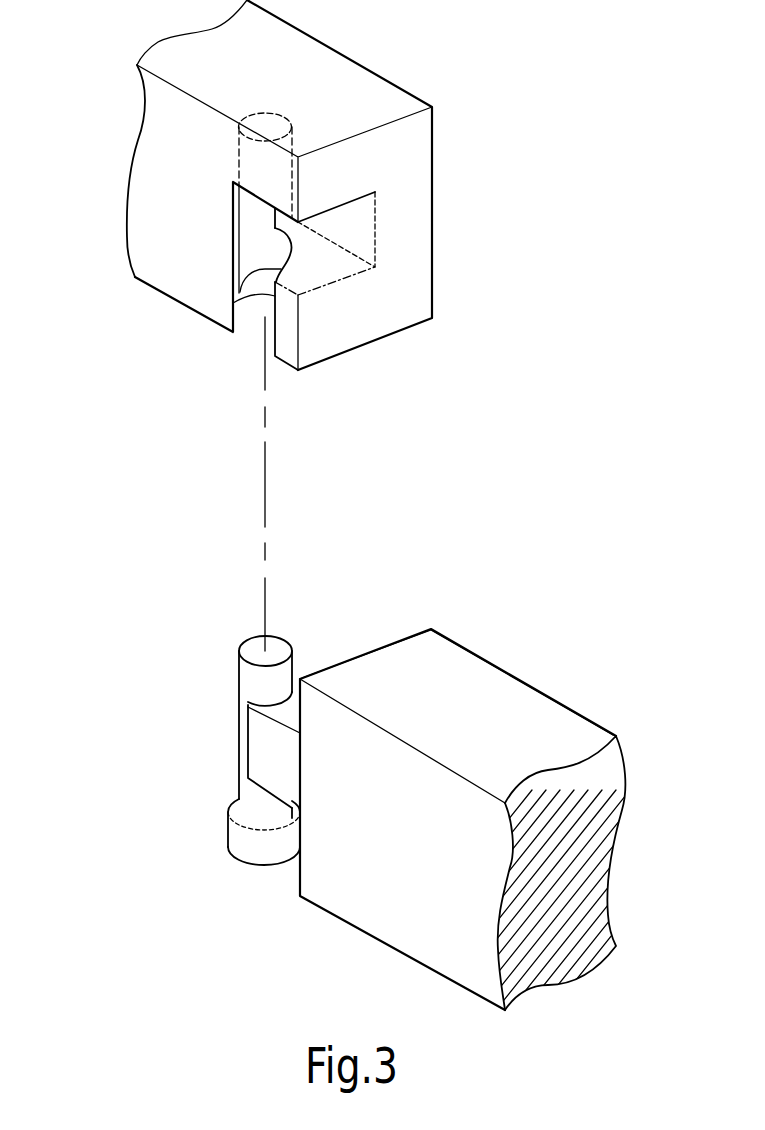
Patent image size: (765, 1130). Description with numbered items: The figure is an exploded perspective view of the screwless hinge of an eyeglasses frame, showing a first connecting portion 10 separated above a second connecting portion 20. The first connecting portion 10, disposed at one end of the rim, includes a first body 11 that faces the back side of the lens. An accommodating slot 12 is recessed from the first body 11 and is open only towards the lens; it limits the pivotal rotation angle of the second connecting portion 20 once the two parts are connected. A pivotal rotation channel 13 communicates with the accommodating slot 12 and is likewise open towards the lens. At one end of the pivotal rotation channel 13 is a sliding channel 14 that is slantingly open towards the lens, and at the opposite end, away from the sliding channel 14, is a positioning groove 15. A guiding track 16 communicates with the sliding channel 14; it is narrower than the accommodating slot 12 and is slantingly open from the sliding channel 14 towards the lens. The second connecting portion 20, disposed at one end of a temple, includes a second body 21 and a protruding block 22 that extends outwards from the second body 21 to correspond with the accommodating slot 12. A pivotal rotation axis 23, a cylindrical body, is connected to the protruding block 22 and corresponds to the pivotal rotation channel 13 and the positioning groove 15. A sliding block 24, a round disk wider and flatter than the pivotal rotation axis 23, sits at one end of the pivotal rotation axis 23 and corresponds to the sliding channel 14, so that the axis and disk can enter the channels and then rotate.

The first connecting portion 10 is at (422, 88).
The first body 11 is at (415, 147).
The accommodating slot 12 is at (357, 227).
The pivotal rotation channel 13 is at (260, 228).
The sliding channel 14 is at (262, 280).
The positioning groove 15 is at (267, 127).
The guiding track 16 is at (282, 268).
The second connecting portion 20 is at (536, 677).
The second body 21 is at (447, 668).
The protruding block 22 is at (270, 752).
The pivotal rotation axis 23 is at (252, 675).
The sliding block 24 is at (242, 842).